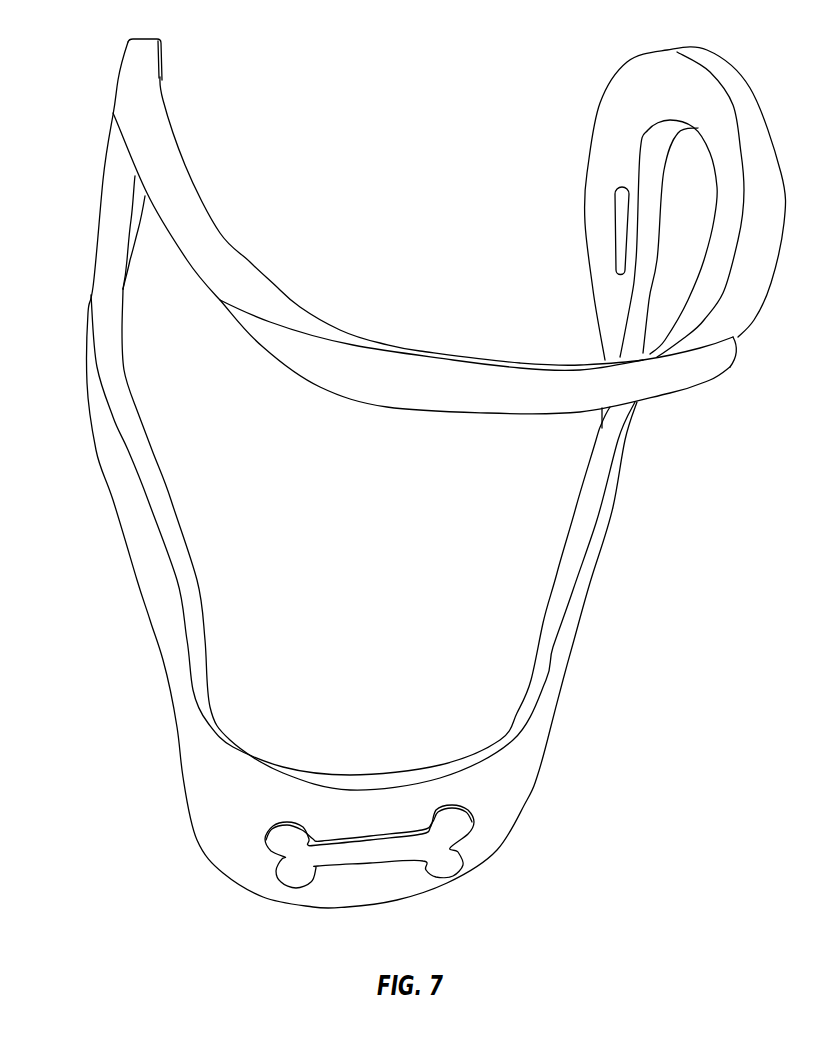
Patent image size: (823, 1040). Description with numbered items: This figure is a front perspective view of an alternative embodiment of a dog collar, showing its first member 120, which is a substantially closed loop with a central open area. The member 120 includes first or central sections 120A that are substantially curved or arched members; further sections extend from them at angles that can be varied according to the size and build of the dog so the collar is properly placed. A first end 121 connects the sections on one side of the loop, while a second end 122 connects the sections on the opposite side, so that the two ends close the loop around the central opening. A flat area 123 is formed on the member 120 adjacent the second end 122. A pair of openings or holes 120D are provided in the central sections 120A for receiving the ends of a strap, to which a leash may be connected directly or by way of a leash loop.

The first member 120 is at (276, 74).
The central section 120A is at (100, 213).
The opening 120D is at (613, 232).
The first end 121 is at (475, 405).
The second end 122 is at (333, 893).
The flat area 123 is at (455, 867).